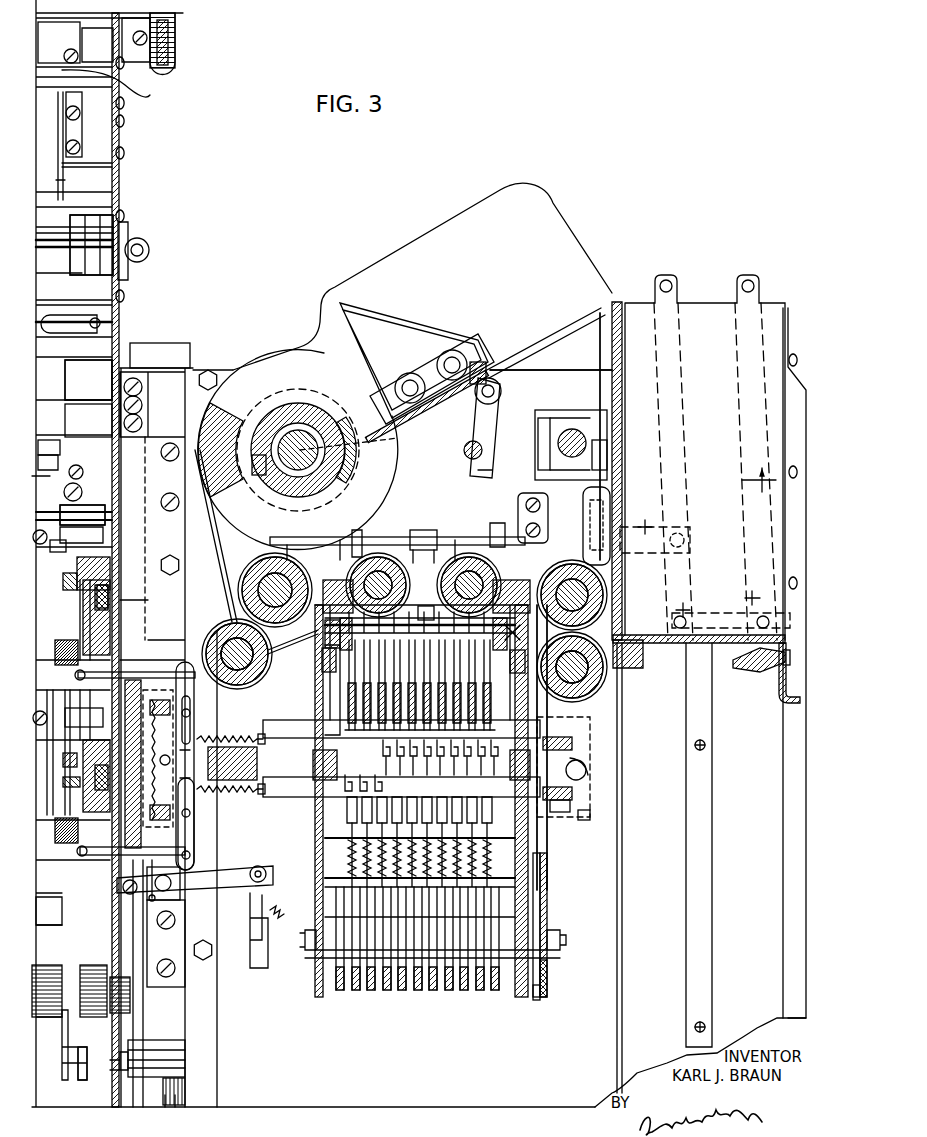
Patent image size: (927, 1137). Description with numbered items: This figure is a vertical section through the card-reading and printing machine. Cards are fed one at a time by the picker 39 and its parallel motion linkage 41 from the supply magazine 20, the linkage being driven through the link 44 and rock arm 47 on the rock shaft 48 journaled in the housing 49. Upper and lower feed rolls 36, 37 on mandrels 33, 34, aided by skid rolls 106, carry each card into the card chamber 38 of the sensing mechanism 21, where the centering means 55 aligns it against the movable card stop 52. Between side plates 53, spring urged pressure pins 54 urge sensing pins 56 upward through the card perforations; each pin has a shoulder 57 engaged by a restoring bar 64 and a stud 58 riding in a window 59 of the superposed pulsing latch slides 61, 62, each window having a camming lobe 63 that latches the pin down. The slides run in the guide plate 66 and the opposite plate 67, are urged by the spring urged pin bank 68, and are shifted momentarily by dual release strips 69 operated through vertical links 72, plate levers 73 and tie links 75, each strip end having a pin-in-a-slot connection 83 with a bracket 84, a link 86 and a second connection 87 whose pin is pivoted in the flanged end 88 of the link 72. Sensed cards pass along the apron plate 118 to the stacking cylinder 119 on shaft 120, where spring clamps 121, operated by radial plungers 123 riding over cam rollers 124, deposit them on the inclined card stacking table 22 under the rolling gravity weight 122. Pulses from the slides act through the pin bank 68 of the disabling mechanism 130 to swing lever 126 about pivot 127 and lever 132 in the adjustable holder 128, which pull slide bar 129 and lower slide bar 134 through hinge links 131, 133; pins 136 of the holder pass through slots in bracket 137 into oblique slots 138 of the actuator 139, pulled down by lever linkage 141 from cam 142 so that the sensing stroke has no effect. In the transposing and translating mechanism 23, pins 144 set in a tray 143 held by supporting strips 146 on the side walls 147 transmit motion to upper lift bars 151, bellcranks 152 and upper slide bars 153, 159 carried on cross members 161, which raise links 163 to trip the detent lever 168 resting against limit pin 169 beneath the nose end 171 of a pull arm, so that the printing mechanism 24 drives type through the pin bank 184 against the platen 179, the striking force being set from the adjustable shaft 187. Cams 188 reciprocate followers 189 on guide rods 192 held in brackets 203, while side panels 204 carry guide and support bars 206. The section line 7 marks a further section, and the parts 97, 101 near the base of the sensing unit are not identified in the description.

The section line 7 is at (404, 485).
The supply magazine 20 is at (706, 463).
The sensing mechanism 21 is at (316, 839).
The card stacking table 22 is at (521, 345).
The transposing and translating mechanism combination 23 is at (70, 387).
The printing mechanism 24 is at (180, 58).
The upper feed roll mandrels 33 is at (362, 585).
The lower feed roll mandrels 34 is at (243, 662).
The upper feed rolls 36 is at (260, 565).
The lower feed rolls 37 is at (260, 660).
The card chamber 38 is at (426, 606).
The picker 39 is at (762, 668).
The parallel motion linkage 41 is at (745, 600).
The link 44 is at (645, 525).
The rock arm 47 is at (582, 482).
The rock shaft 48 is at (556, 445).
The housing 49 is at (567, 378).
The movable card stop 52 is at (325, 632).
The side plates 53 is at (516, 880).
The spring urged pressure pins 54 is at (492, 858).
The centering means 55 is at (425, 538).
The sensing pins 56 is at (483, 656).
The shoulder 57 is at (470, 720).
The stud 58 is at (385, 746).
The window 59 is at (345, 786).
The upper pulsing latch slide 61 is at (292, 742).
The lower pulsing latch slide 62 is at (300, 797).
The camming lobe 63 is at (425, 760).
The restoring bar 64 is at (357, 703).
The guide plate 66 is at (512, 776).
The opposite plate 67 is at (313, 766).
The spring urged pin bank 68 is at (215, 792).
The dual release strips 69 is at (568, 762).
The vertical links 72 is at (547, 895).
The plate levers 73 is at (538, 999).
The tie links 75 is at (548, 976).
The pin-in-a-slot connection 83 is at (560, 812).
The bracket 84 is at (583, 790).
The link 86 is at (572, 765).
The pin-in-a-slot connection 87 is at (575, 740).
The flanged end 88 is at (585, 822).
The blade 97 is at (488, 992).
The blade 101 is at (447, 992).
The skid rolls 106 is at (322, 660).
The apron plate 118 is at (222, 545).
The stacking cylinder 119 is at (282, 362).
The shaft 120 is at (293, 430).
The spring clamps 121 is at (228, 428).
The gravity weight 122 is at (427, 320).
The plungers 123 is at (352, 425).
The cam rollers 124 is at (340, 424).
The lever 126 is at (200, 700).
The pivot 127 is at (215, 731).
The adjustable holder 128 is at (158, 760).
The slide bar 129 is at (58, 673).
The disabling mechanism 130 is at (200, 835).
The hinge link 131 is at (148, 660).
The lever 132 is at (198, 805).
The hinge link 133 is at (181, 880).
The lower slide bar 134 is at (48, 857).
The pins 136 is at (205, 690).
The bracket 137 is at (193, 660).
The obliquely disposed slots 138 is at (162, 700).
The vertically movable actuator 139 is at (188, 897).
The lever linkage 141 is at (153, 903).
The cam 142 is at (80, 1085).
The tray 143 is at (105, 575).
The pins 144 is at (56, 741).
The supporting strips 146 is at (106, 594).
The side walls 147 is at (120, 178).
The upper lift bars 151 is at (66, 571).
The bellcranks 152 is at (60, 546).
The upper slide bars 153 is at (100, 515).
The upper slide bars 159 is at (48, 718).
The cross members 161 is at (78, 512).
The links 163 is at (40, 474).
The detent lever 168 is at (65, 333).
The limit pin 169 is at (93, 328).
The nose end 171 is at (65, 195).
The platen 179 is at (118, 88).
The bank of pins 184 is at (59, 42).
The manually adjustable shaft 187 is at (96, 222).
The cams 188 is at (138, 994).
The followers 189 is at (140, 1050).
The vertical guide rods 192 is at (186, 1087).
The brackets 203 is at (178, 342).
The side panels 204 is at (100, 450).
The guide and support bars 206 is at (82, 129).